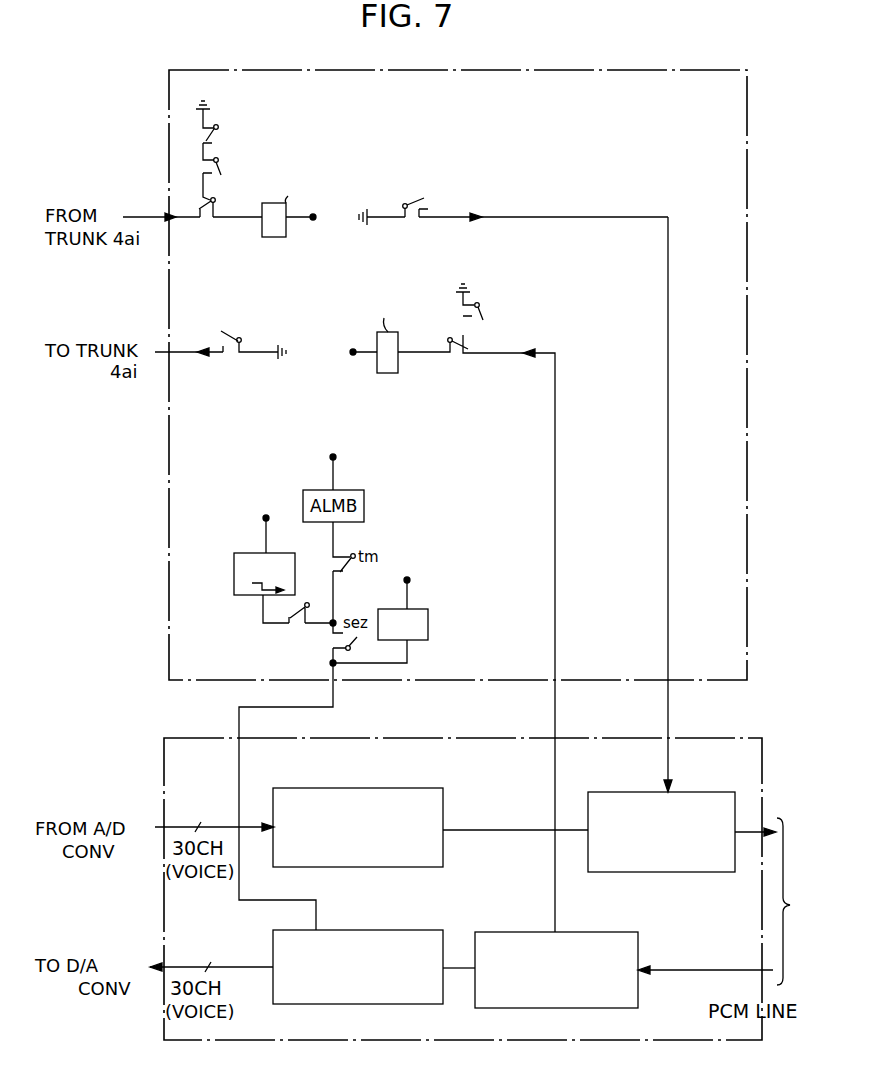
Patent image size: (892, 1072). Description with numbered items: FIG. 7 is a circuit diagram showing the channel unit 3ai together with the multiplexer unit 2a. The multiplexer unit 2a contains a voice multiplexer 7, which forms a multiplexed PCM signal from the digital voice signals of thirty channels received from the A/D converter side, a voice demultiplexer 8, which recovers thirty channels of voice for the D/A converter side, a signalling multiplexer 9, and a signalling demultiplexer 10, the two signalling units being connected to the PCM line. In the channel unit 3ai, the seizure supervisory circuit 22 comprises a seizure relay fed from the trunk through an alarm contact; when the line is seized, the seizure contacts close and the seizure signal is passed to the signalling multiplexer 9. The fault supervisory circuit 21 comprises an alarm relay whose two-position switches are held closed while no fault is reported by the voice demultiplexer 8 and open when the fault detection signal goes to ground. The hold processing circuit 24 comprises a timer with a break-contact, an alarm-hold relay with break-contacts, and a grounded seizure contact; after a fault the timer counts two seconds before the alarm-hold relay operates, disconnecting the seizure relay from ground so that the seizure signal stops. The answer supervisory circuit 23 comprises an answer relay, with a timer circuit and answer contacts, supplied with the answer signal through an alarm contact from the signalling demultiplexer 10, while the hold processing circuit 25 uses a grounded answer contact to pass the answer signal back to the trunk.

The channel unit 3ai is at (570, 70).
The seizure supervisory circuit 22 is at (263, 183).
The hold processing circuit 24 is at (435, 173).
The hold processing circuit 25 is at (222, 368).
The answer supervisory circuit 23 is at (395, 375).
The fault supervisory circuit 21 is at (430, 628).
The multiplexer unit 2a is at (708, 738).
The voice multiplexer 7 is at (415, 790).
The voice demultiplexer 8 is at (418, 930).
The signalling multiplexer 9 is at (716, 790).
The signalling demultiplexer 10 is at (616, 932).